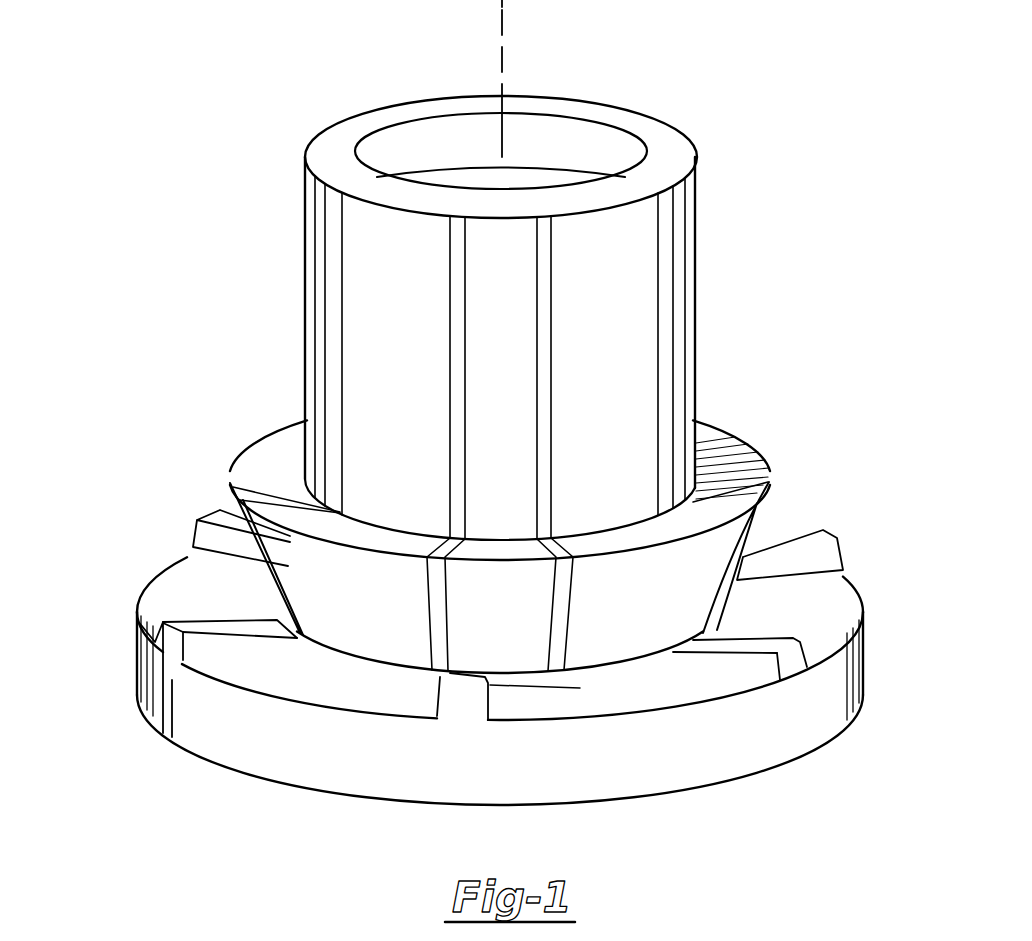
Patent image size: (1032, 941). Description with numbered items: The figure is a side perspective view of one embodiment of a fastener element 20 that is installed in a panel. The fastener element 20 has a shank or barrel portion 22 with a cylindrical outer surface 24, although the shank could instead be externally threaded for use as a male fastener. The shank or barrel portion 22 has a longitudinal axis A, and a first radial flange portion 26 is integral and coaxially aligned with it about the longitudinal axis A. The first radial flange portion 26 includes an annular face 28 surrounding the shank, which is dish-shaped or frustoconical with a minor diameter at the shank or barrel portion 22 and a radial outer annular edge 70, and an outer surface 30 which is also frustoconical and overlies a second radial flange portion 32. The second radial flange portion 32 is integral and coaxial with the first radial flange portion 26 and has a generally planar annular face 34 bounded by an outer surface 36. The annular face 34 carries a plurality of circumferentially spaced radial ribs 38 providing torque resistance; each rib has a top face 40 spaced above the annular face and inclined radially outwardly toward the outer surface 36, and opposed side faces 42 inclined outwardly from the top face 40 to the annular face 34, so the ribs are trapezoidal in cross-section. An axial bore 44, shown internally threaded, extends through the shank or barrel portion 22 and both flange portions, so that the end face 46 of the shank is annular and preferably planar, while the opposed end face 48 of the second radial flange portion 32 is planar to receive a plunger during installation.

The fastener element 20 is at (488, 427).
The shank or barrel portion 22 is at (300, 257).
The cylindrical outer surface 24 is at (416, 357).
The first radial flange portion 26 is at (780, 468).
The annular face 28 is at (258, 453).
The outer surface 30 is at (632, 614).
The second radial flange portion 32 is at (488, 661).
The annular face 34 is at (843, 583).
The outer surface 36 is at (660, 770).
The radial ribs 38 is at (833, 524).
The top face 40 is at (188, 627).
The side faces 42 is at (225, 645).
The axial bore 44 is at (548, 136).
The end face 46 is at (635, 128).
The opposed end face 48 is at (310, 788).
The radial outer annular edge 70 is at (726, 428).
The longitudinal axis A is at (498, 28).